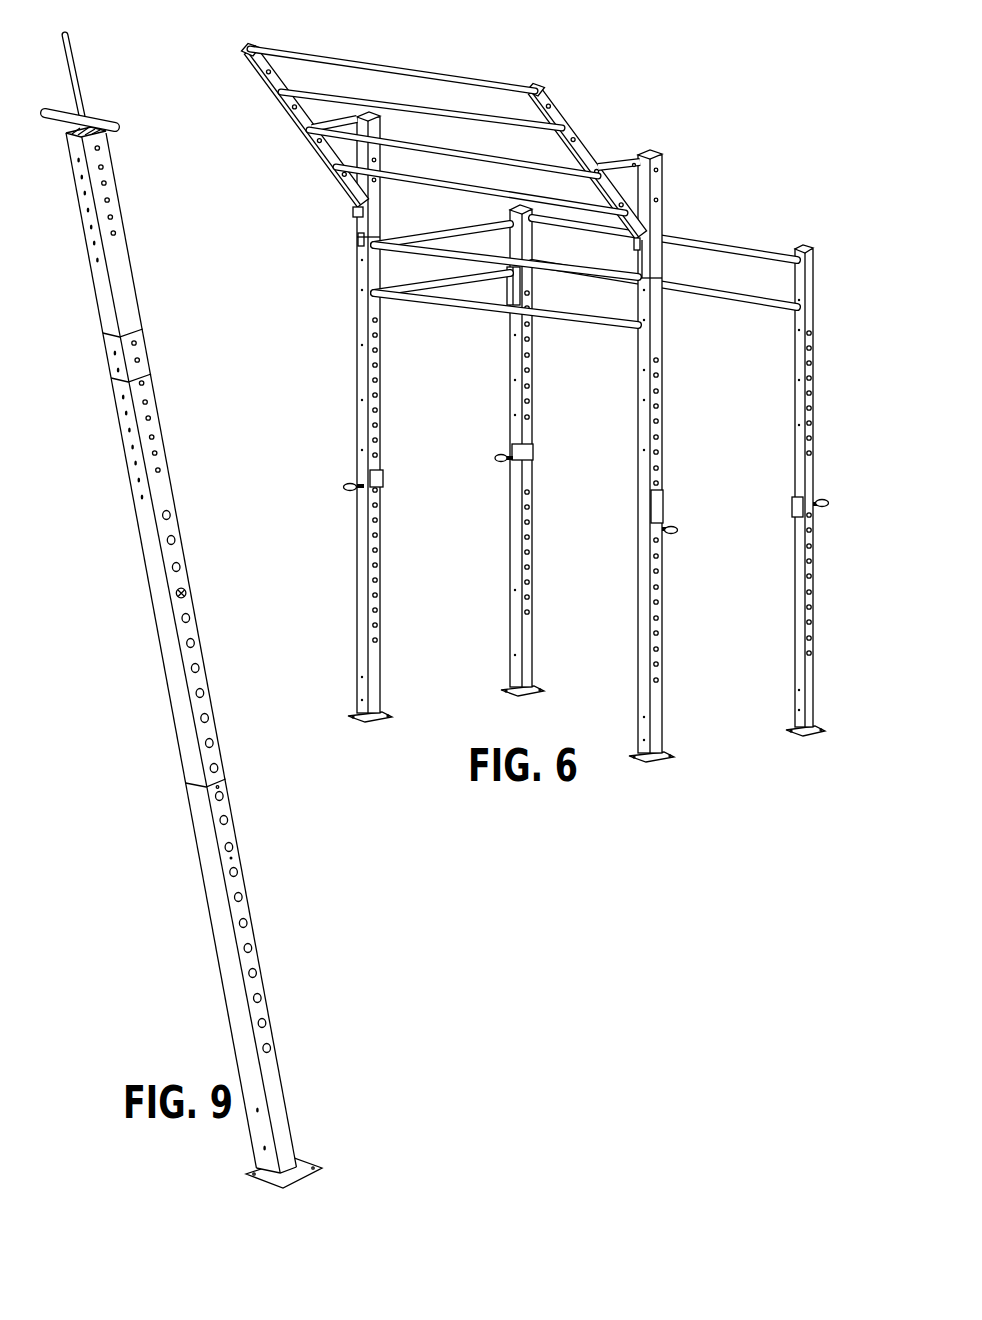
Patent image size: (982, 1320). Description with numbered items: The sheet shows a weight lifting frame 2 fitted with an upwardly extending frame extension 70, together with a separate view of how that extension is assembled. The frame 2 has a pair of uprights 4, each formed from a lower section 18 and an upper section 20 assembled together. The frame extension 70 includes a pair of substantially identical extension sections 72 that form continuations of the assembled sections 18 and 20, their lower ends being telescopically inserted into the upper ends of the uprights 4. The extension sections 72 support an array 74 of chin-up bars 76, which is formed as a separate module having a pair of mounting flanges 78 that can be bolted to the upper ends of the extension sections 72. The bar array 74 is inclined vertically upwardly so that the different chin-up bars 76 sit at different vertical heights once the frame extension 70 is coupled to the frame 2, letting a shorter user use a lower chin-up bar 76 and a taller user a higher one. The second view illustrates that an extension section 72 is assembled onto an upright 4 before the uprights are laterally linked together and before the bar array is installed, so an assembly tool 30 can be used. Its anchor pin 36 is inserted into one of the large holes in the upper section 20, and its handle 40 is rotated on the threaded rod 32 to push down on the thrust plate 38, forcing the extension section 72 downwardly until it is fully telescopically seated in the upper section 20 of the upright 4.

In FIG. 6, the frame 2 is at (586, 437).
In FIG. 9, the upright 4 is at (177, 603).
In FIG. 9, the lower section 18 is at (241, 884).
In FIG. 9, the upper section 20 is at (178, 520).
In FIG. 9, the assembly tool 30 is at (95, 96).
In FIG. 9, the threaded rod 32 is at (73, 92).
In FIG. 9, the anchor pin 36 is at (188, 596).
In FIG. 9, the thrust plate 38 is at (64, 133).
In FIG. 9, the handle 40 is at (104, 118).
In FIG. 6, the frame extension 70 is at (475, 140).
In FIG. 6, the extension section 72 is at (375, 217).
In FIG. 9, the extension section 72 is at (122, 275).
In FIG. 6, the bar array 74 is at (478, 70).
In FIG. 6, the chin-up bar 76 is at (404, 75).
In FIG. 6, the mounting flange 78 is at (645, 183).